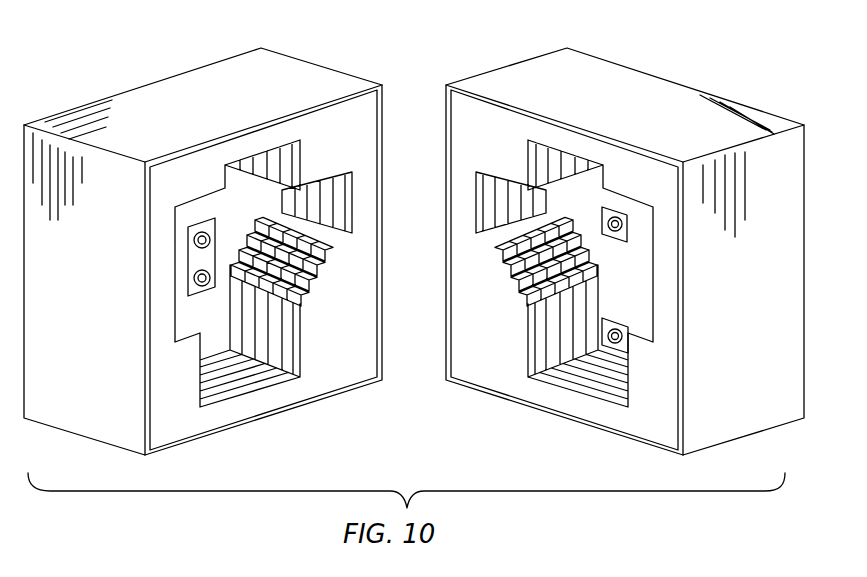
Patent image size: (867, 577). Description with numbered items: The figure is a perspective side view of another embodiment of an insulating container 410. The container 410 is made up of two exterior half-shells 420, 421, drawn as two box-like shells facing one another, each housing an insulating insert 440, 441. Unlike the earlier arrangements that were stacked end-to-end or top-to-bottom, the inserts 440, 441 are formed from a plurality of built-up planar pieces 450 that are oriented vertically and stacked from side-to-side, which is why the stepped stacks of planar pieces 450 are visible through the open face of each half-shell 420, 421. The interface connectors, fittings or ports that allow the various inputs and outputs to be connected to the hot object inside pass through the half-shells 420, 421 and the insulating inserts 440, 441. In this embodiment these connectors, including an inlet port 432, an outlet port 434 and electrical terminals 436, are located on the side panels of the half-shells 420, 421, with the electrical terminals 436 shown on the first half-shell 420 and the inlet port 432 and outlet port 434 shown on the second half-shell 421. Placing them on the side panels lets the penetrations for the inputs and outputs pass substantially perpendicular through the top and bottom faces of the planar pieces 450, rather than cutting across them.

The insulating container 410 is at (668, 38).
The exterior half-shell 420 is at (170, 75).
The exterior half-shell 421 is at (720, 97).
The inlet port 432 is at (623, 240).
The outlet port 434 is at (628, 343).
The electrical terminals 436 is at (200, 257).
The insulating insert 440 is at (167, 412).
The insulating insert 441 is at (660, 412).
The planar pieces 450 is at (273, 327).